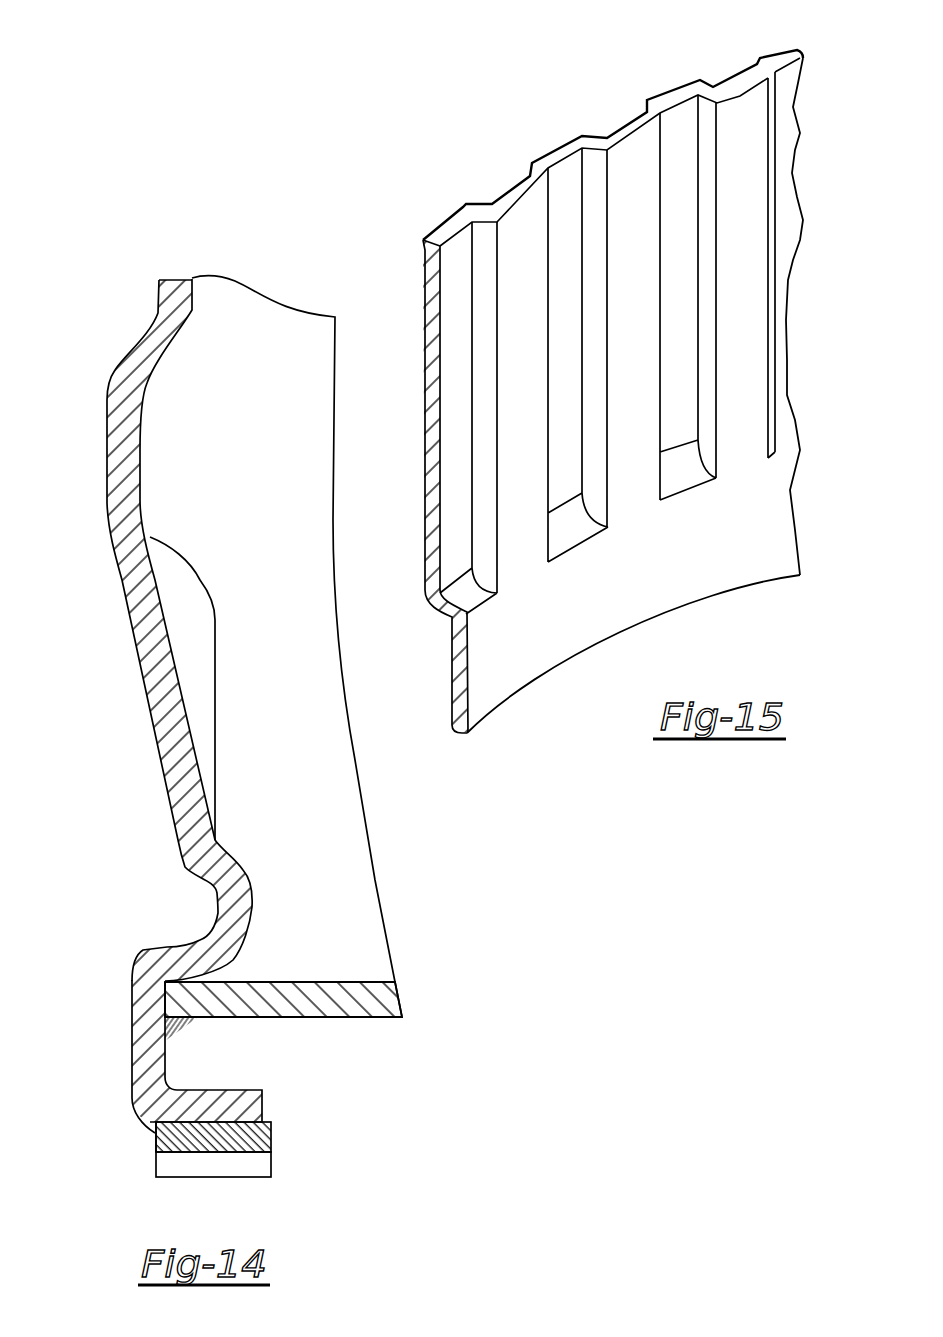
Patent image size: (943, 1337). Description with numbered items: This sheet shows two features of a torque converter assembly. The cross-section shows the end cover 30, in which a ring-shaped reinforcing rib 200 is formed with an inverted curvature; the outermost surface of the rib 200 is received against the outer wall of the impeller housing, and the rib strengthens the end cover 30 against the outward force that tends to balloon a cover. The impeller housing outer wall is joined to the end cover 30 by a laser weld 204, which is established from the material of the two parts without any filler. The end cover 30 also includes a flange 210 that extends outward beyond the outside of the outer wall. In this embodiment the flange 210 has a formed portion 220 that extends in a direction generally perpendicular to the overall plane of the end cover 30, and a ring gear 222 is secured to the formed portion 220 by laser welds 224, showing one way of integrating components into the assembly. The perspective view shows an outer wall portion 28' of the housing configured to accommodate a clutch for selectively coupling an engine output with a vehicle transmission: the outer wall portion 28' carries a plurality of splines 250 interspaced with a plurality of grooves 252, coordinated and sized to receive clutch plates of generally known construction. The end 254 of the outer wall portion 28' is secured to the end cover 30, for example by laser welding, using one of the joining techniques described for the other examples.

In FIG. 14, the end cover 30 is at (128, 665).
In FIG. 14, the reinforcing rib 200 is at (224, 920).
In FIG. 14, the flange 210 is at (132, 1050).
In FIG. 14, the formed portion 220 is at (262, 1098).
In FIG. 14, the ring gear 222 is at (271, 1135).
In FIG. 14, the laser welds 224 is at (153, 1130).
In FIG. 14, the laser weld 204 is at (177, 1022).
In FIG. 15, the outer wall portion 28' is at (649, 373).
In FIG. 15, the splines 250 is at (632, 383).
In FIG. 15, the grooves 252 is at (432, 268).
In FIG. 15, the end 254 is at (556, 174).